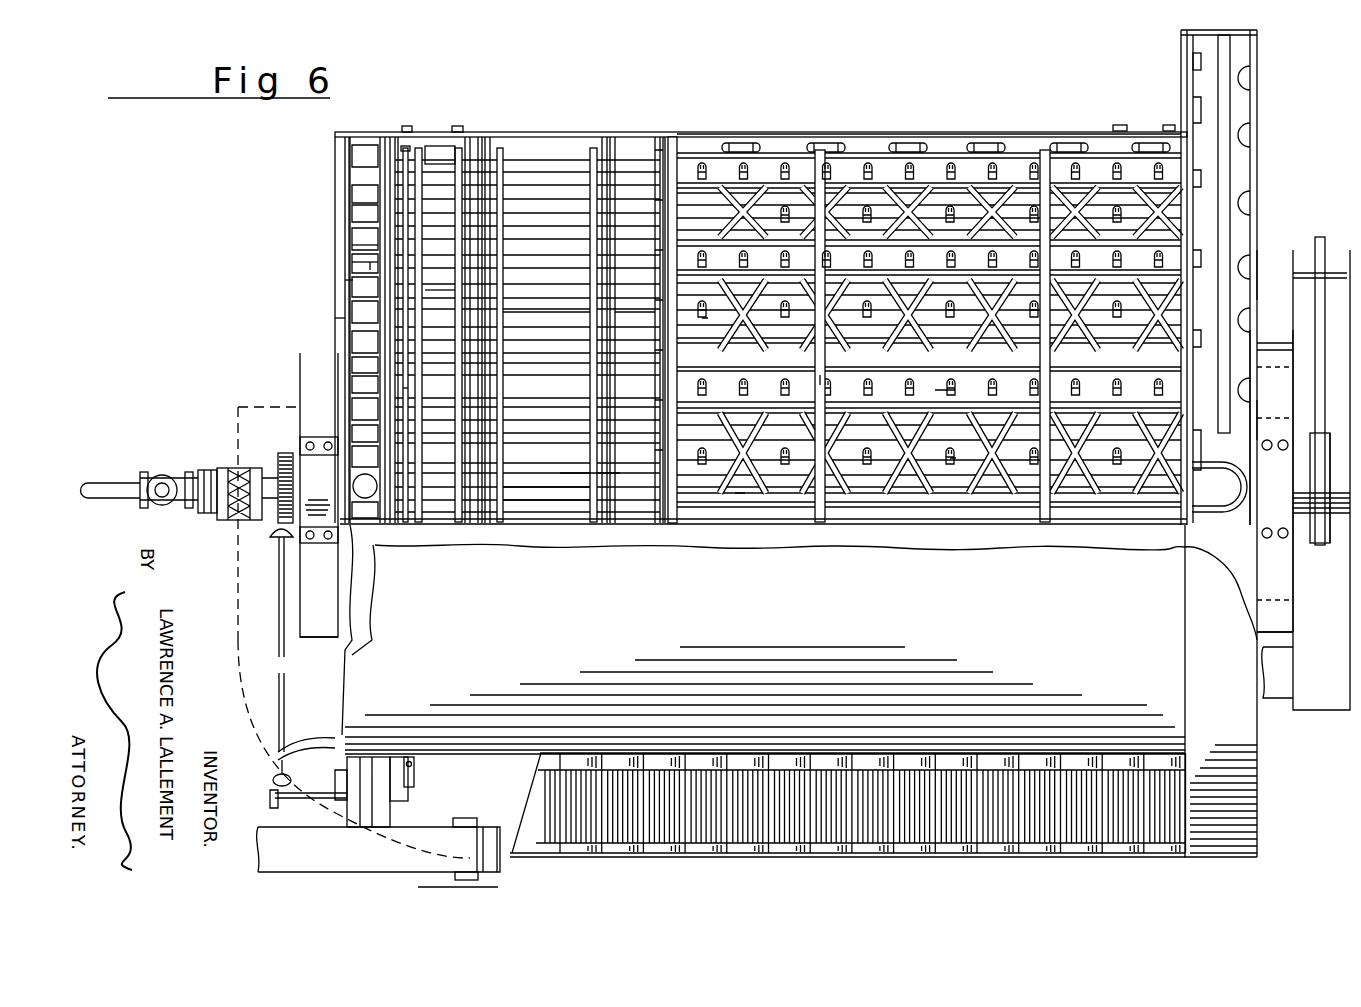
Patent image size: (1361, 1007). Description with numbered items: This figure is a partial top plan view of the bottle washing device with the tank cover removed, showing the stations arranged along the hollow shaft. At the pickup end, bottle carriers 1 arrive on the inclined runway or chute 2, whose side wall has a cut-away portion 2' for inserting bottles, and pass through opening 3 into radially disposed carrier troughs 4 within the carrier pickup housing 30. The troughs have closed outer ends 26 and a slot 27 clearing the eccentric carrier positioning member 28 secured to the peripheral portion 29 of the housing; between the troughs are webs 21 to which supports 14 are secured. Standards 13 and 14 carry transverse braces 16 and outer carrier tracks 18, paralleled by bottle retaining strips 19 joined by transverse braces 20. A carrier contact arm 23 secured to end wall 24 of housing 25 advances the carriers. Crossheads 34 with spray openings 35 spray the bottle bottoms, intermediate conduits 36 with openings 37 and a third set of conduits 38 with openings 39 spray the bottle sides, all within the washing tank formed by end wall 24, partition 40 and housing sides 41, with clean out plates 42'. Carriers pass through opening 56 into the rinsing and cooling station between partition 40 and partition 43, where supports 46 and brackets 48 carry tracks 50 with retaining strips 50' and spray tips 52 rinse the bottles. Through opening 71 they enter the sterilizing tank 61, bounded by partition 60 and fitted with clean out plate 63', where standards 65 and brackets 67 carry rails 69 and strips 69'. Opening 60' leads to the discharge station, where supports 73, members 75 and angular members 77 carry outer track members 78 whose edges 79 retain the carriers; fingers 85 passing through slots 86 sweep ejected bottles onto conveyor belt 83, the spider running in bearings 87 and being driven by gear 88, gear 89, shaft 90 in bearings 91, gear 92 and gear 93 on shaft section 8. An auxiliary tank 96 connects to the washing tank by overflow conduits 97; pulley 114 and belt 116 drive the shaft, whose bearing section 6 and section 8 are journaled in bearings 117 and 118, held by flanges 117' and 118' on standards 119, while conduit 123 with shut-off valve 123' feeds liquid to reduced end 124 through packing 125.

The bottle carriers 1 is at (620, 526).
The inclined runway or chute 2 is at (523, 641).
The cut-away portion of chute side wall 2' is at (1082, 815).
The opening 3 is at (1165, 850).
The carrier troughs 4 is at (1258, 222).
The bearing section 6 is at (1331, 545).
The rinser and cooler section 8 is at (270, 478).
The standards or supports 13 is at (658, 150).
The standards or supports 14 is at (1191, 112).
The transverse angles or braces 16 is at (668, 148).
The outer rails or carrier tracks 18 is at (680, 148).
The bottle retaining strips 19 is at (945, 398).
The transverse braces 20 is at (825, 382).
The web or connecting portion 21 is at (1191, 62).
The carrier contact arm 23 is at (1220, 466).
The end wall 24 is at (1258, 262).
The housing 25 is at (940, 632).
The closed outer ends 26 is at (1258, 40).
The slot 27 is at (1258, 62).
The eccentric carrier positioning member 28 is at (1230, 130).
The peripheral portion 29 is at (1180, 31).
The carrier pickup housing 30 is at (1258, 82).
The crossheads 34 is at (748, 143).
The spray openings 35 is at (820, 150).
The intermediate conduits 36 is at (703, 318).
The spray openings 37 is at (702, 318).
The third set of conduits 38 is at (955, 160).
The spray openings 39 is at (955, 172).
The partition 40 is at (613, 313).
The housing sides 41 is at (875, 133).
The clean out plates 42' is at (1135, 114).
The partition 43 is at (505, 313).
The standards or supports 46 is at (487, 148).
The transverse angles or brackets 48 is at (594, 150).
The outer angular rail or track sections 50 is at (526, 312).
The bottle retaining strips 50' is at (546, 515).
The spray tips 52 is at (572, 526).
The opening 56 is at (604, 526).
The partition 60 is at (337, 330).
The opening 60' is at (407, 359).
The sterilizing tank 61 is at (442, 146).
The clean out plate 63' is at (378, 117).
The radiating standards 65 is at (408, 388).
The transverse arms or brackets 67 is at (405, 148).
The short track sections or rails 69 is at (436, 312).
The strips 69' is at (440, 269).
The opening 71 is at (466, 527).
The radiating supports 73 is at (346, 318).
The transverse members 75 is at (352, 282).
The short angular members 77 is at (352, 245).
The outer rail or track members 78 is at (352, 264).
The edges 79 is at (376, 268).
The conveyor belt 83 is at (478, 828).
The fingers 85 is at (408, 796).
The slots 86 is at (414, 772).
The bearings 87 is at (350, 798).
The gear 88 is at (272, 802).
The gear 89 is at (274, 785).
The shaft 90 is at (279, 702).
The bearings 91 is at (279, 540).
The gear 92 is at (270, 530).
The gear 93 is at (287, 452).
The auxiliary or overflow tank 96 is at (1322, 708).
The overflow conduits 97 is at (1262, 290).
The pulley 114 is at (1320, 546).
The belt 116 is at (1333, 228).
The bearing 117 is at (1275, 481).
The flange 117' is at (1277, 415).
The bearing 118 is at (320, 495).
The flange 118' is at (320, 436).
The standards 119 is at (322, 637).
The conduit 123 is at (111, 511).
The shut-off valve 123' is at (169, 506).
The reduced end 124 is at (262, 480).
The packing means 125 is at (240, 508).